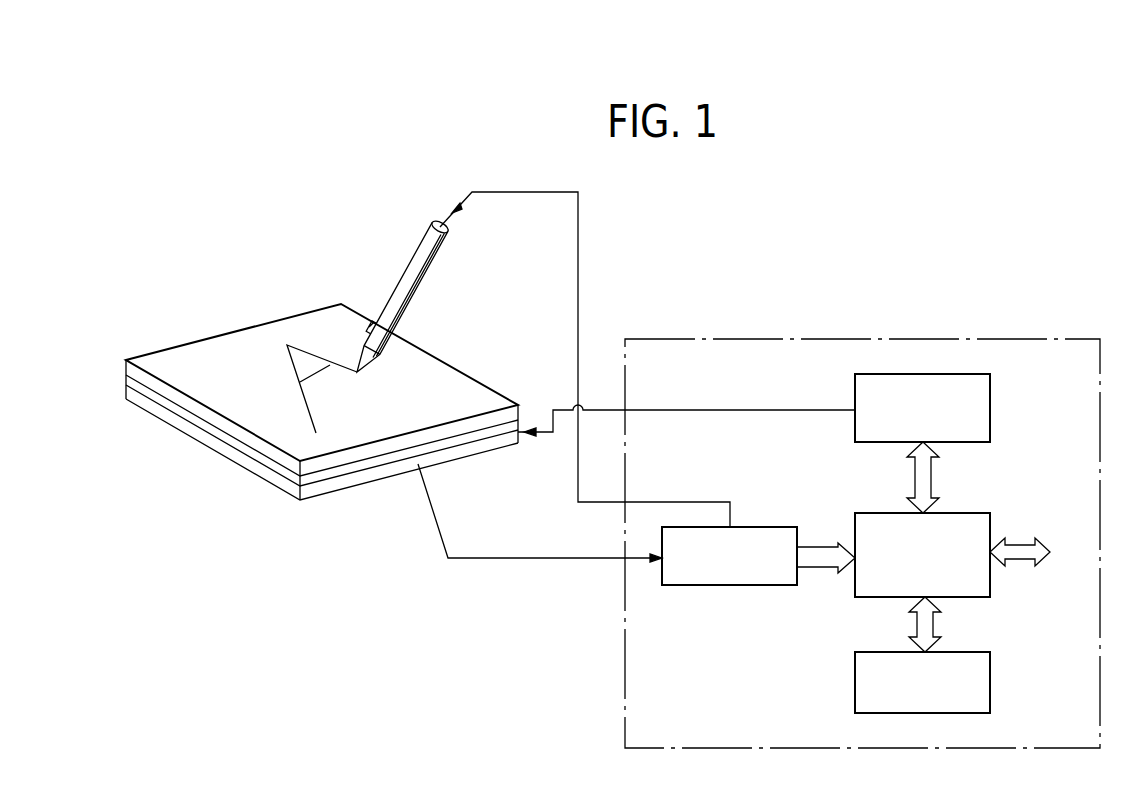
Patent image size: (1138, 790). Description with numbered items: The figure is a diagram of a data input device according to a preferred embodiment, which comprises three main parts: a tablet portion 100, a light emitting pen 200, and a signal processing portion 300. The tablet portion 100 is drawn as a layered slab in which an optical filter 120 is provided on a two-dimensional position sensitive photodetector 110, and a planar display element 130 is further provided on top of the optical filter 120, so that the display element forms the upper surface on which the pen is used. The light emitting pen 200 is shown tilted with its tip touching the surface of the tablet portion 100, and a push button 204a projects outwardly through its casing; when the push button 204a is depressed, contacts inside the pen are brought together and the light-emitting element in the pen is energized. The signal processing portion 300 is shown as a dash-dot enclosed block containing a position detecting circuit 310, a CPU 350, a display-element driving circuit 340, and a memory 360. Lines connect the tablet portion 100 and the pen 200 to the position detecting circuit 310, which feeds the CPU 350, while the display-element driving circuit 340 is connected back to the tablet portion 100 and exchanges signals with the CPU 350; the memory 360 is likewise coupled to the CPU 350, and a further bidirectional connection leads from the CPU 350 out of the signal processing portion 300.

The tablet portion 100 is at (336, 373).
The two-dimensional position sensitive photodetector 110 is at (490, 380).
The optical filter 120 is at (468, 437).
The planar display element 130 is at (328, 486).
The light emitting pen 200 is at (535, 359).
The push button 204a is at (370, 322).
The signal processing portion 300 is at (770, 340).
The position detecting circuit 310 is at (770, 585).
The display-element driving circuit 340 is at (983, 443).
The CPU 350 is at (977, 597).
The memory 360 is at (990, 695).